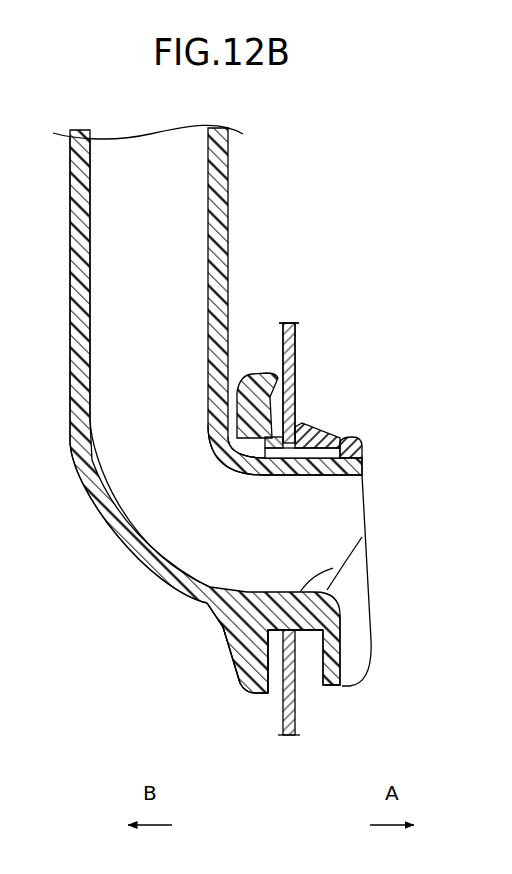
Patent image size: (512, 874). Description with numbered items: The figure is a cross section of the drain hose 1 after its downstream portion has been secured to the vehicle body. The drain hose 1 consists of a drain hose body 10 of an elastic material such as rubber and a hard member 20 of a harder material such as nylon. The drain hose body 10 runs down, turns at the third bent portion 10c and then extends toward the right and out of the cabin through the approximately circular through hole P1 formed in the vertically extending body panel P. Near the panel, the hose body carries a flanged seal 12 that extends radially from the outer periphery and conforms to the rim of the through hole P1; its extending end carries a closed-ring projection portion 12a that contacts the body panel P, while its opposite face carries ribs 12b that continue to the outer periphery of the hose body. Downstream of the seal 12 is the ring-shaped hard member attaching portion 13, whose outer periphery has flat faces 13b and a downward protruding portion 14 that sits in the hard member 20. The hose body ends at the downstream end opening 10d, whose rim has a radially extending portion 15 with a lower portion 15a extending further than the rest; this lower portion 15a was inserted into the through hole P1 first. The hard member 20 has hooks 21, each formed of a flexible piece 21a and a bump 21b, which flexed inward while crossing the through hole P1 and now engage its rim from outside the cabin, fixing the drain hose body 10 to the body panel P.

The drain hose 1 is at (69, 199).
The drain hose body 10 is at (69, 261).
The third bent portion 10c is at (112, 541).
The downstream end opening 10d is at (366, 484).
The seal 12 is at (260, 697).
The projection portion 12a is at (277, 707).
The ribs 12b is at (221, 647).
The hard member attaching portion 13 is at (333, 568).
The flat faces 13b is at (364, 452).
The protruding portion 14 is at (305, 643).
The extending portion 15 is at (352, 440).
The lower portion 15a is at (343, 645).
The hard member 20 is at (318, 437).
The hooks 21 is at (368, 346).
The flexible piece 21a is at (337, 445).
The bump 21b is at (297, 385).
The body panel P is at (280, 345).
The through hole P1 is at (312, 618).